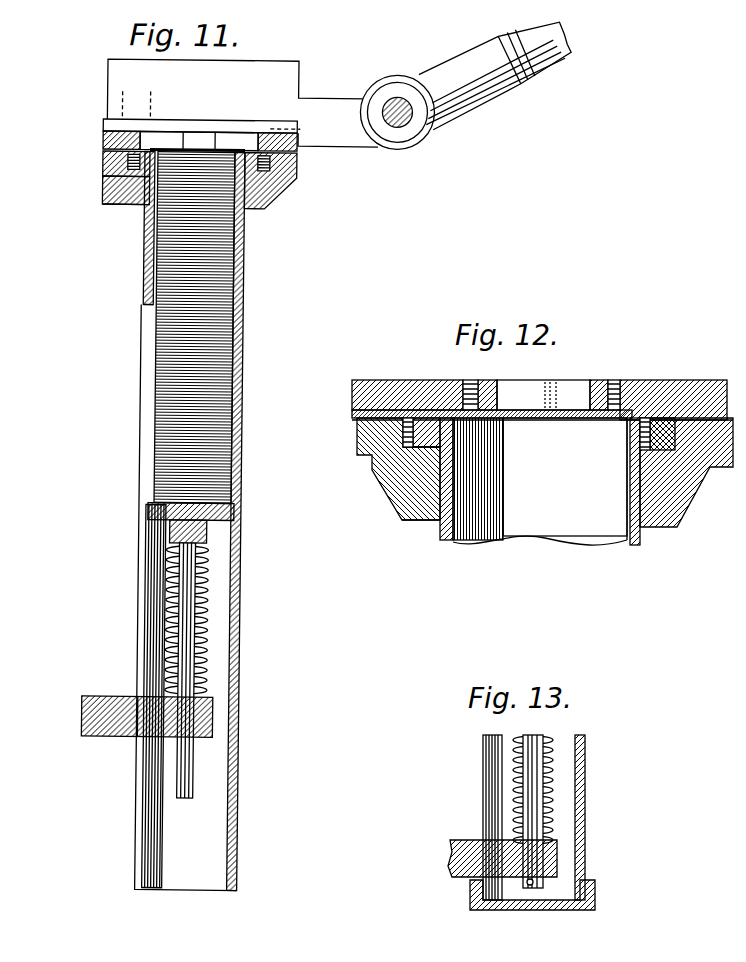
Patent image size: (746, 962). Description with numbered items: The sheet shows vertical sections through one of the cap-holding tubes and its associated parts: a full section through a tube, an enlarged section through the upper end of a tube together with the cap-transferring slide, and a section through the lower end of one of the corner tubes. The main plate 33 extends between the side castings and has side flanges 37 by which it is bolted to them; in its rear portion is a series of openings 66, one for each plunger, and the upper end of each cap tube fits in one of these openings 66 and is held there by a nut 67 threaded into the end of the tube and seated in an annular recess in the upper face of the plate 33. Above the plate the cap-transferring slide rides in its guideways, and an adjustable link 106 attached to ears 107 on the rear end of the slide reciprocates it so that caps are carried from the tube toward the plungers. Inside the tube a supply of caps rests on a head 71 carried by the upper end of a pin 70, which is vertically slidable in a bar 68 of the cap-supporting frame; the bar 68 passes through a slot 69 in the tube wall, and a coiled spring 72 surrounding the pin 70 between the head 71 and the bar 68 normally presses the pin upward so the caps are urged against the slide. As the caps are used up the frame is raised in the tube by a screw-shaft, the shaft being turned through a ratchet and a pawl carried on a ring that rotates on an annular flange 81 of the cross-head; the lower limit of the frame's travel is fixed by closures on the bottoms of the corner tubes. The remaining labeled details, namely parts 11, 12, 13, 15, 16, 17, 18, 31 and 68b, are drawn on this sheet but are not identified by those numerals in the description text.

In FIG. 11, the cover plate 11 is at (148, 128).
In FIG. 12, the cover plate 11 is at (546, 410).
In FIG. 11, the mounting plate 12 is at (105, 146).
In FIG. 11, the slotted plate 13 is at (180, 128).
In FIG. 11, the side flange 37 is at (258, 75).
In FIG. 11, the ear 107 is at (323, 105).
In FIG. 11, the adjustable link 106 is at (543, 45).
In FIG. 11, the nut 67 is at (106, 174).
In FIG. 12, the nut 67 is at (662, 530).
In FIG. 11, the plate 33 is at (104, 203).
In FIG. 12, the plate 33 is at (372, 456).
In FIG. 11, the opening 66 is at (127, 206).
In FIG. 12, the opening 66 is at (424, 522).
In FIG. 11, the pin 70 is at (208, 352).
In FIG. 12, the pin 70 is at (552, 474).
In FIG. 13, the pin 70 is at (536, 766).
In FIG. 11, the head 71 is at (224, 528).
In FIG. 11, the coiled spring 72 is at (206, 598).
In FIG. 13, the coiled spring 72 is at (560, 744).
In FIG. 11, the slot 69 is at (146, 625).
In FIG. 13, the slot 69 is at (490, 800).
In FIG. 11, the tubular housing 31 is at (238, 628).
In FIG. 12, the tubular housing 31 is at (608, 520).
In FIG. 13, the tubular housing 31 is at (588, 806).
In FIG. 11, the bar 68 is at (100, 738).
In FIG. 13, the bar 68 is at (466, 870).
In FIG. 12, the top plate 18 is at (366, 408).
In FIG. 12, the screws 16 is at (470, 396).
In FIG. 12, the recess 15 is at (516, 400).
In FIG. 12, the cavity 17 is at (556, 420).
In FIG. 12, the block 68b is at (406, 490).
In FIG. 13, the annular flange 81 is at (552, 908).